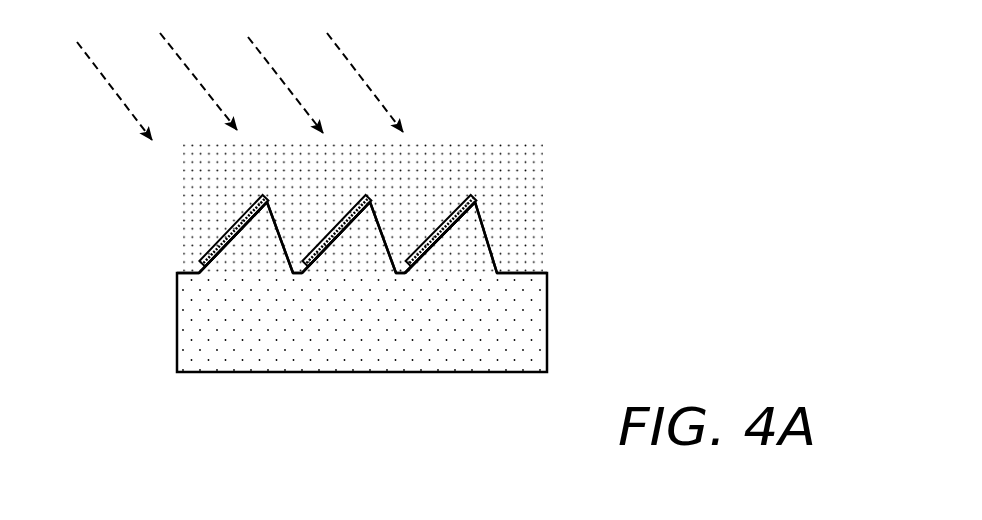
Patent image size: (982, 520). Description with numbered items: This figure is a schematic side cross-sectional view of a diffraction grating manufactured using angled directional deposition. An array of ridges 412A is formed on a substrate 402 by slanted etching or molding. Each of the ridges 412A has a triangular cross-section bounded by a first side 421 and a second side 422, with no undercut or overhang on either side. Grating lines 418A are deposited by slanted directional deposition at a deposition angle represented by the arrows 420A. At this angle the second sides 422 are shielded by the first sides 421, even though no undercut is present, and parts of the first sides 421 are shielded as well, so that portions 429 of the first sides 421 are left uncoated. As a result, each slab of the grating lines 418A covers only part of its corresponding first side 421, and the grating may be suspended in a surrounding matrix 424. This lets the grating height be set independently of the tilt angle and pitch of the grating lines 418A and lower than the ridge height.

The substrate 402 is at (177, 335).
The ridges 412A is at (268, 245).
The grating lines 418A is at (254, 211).
The arrows representing deposition angle 420A is at (347, 53).
The first sides 421 is at (230, 242).
The second sides 422 is at (494, 258).
The encapsulation / filler layer 424 is at (525, 152).
The uncoated portions of first sides 429 is at (203, 270).